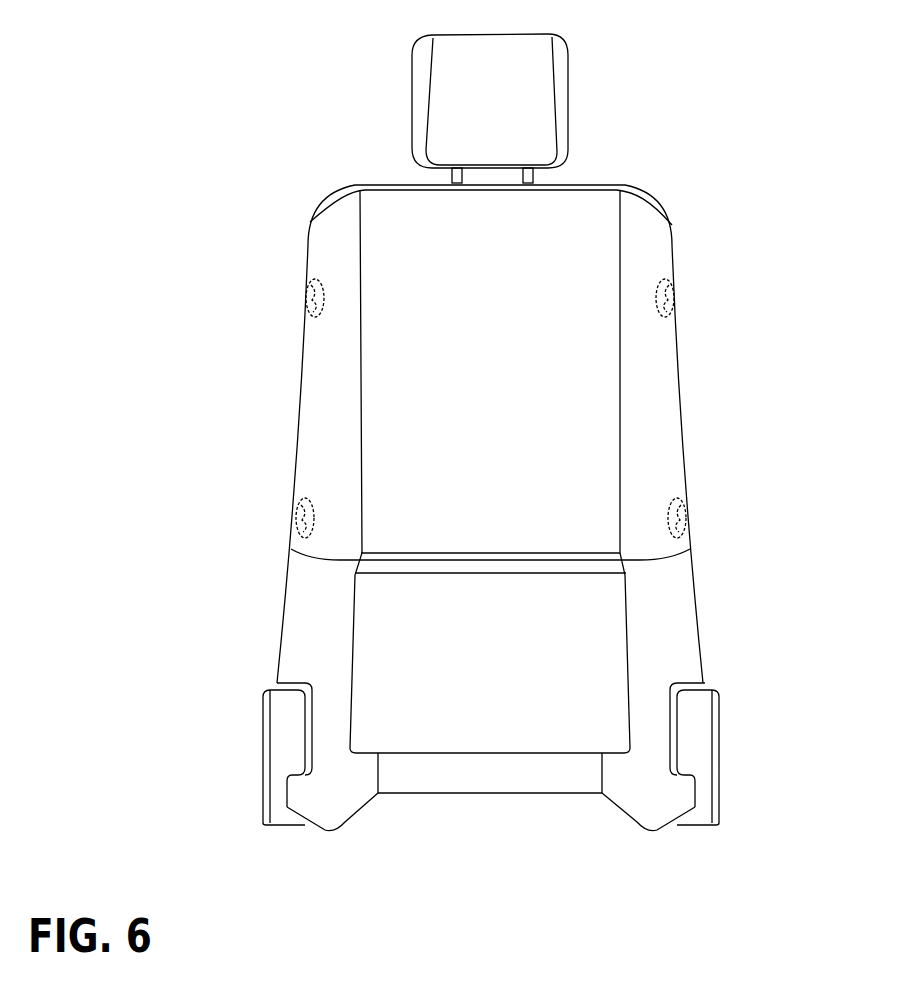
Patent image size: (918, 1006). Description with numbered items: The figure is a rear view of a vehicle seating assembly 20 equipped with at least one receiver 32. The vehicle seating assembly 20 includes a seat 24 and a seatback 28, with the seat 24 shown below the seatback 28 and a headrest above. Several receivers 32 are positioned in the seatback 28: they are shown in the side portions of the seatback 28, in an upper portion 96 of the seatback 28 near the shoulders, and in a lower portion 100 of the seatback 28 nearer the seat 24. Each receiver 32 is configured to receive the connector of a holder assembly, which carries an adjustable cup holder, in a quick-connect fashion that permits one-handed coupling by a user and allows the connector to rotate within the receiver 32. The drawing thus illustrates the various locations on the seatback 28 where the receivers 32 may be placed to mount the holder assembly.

The vehicle seating assembly 20 is at (237, 182).
The seat 24 is at (285, 727).
The seatback 28 is at (562, 244).
The receiver 32 is at (308, 296).
The upper portion 96 is at (405, 215).
The lower portion 100 is at (465, 527).